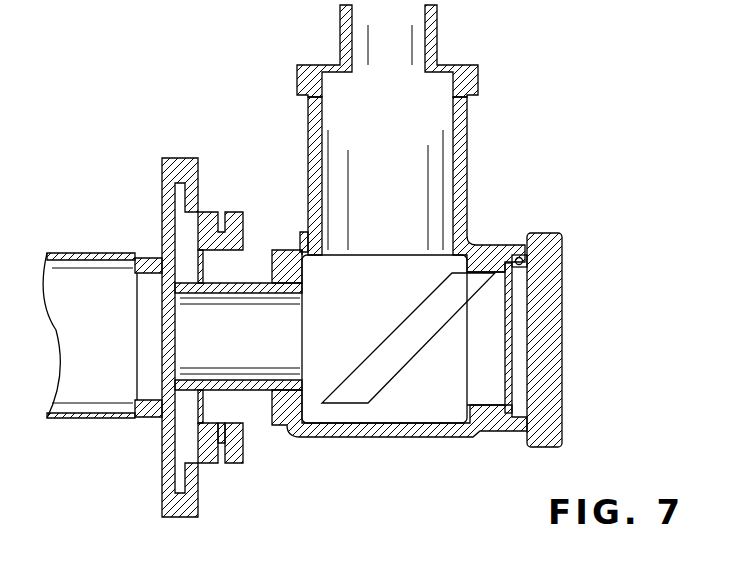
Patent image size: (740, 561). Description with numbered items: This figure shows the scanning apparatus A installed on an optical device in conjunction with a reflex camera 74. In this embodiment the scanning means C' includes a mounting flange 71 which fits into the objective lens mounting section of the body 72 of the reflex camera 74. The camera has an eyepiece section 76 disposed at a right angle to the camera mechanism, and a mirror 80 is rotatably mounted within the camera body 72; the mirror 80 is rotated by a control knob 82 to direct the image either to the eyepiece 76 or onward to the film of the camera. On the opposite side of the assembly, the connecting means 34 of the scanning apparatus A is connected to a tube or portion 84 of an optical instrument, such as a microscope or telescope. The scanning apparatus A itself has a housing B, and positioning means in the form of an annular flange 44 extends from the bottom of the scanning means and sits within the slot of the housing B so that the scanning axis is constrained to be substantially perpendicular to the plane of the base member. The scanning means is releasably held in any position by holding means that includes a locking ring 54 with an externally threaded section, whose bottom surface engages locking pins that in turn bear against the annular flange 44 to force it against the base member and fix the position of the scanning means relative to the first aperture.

The eyepiece section 76 is at (450, 68).
The reflex camera 74 is at (497, 228).
The camera body 72 is at (330, 437).
The mounting flange 71 is at (268, 262).
The mirror 80 is at (405, 334).
The control knob 82 is at (560, 380).
The annular flange 44 is at (173, 238).
The locking ring 54 is at (225, 462).
The connecting means 34 is at (153, 420).
The tube or portion of an optical instrument 84 is at (80, 420).
The scanning apparatus A is at (148, 197).
The housing B is at (175, 160).
The scanning means C' is at (272, 444).